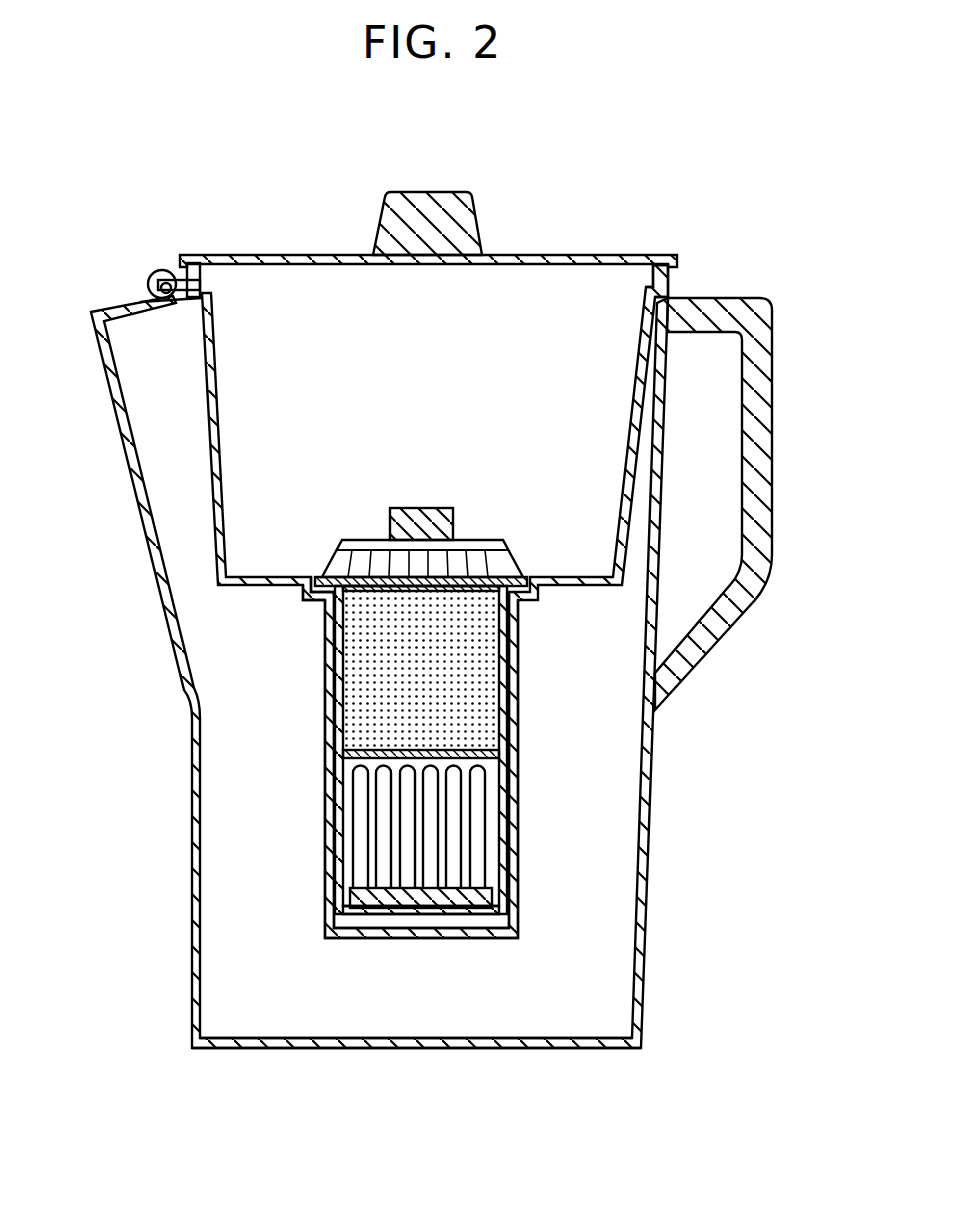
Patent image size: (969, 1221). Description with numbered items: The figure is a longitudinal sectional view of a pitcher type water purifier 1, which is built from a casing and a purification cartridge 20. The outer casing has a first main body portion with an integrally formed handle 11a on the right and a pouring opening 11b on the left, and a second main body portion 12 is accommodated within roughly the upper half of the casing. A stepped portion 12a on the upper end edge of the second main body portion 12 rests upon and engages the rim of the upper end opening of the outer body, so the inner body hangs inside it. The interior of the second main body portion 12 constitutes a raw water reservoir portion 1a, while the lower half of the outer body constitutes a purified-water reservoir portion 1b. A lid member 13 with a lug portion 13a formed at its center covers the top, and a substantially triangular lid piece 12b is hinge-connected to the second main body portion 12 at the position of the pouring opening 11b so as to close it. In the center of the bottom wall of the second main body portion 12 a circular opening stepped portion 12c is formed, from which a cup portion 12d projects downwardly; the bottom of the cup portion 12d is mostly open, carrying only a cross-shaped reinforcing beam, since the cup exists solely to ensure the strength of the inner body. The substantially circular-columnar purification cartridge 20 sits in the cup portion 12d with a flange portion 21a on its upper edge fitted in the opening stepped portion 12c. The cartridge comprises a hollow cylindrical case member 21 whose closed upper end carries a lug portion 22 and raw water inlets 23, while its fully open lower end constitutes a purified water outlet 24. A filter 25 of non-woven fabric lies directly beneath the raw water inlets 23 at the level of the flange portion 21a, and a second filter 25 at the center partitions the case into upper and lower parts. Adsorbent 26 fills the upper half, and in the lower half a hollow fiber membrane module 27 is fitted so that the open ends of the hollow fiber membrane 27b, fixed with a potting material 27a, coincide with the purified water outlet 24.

The pitcher type water purifier 1 is at (700, 171).
The raw water reservoir portion 1a is at (300, 293).
The purified-water reservoir portion 1b is at (603, 978).
The handle 11a is at (770, 549).
The pouring opening 11b is at (112, 392).
The second main body portion 12 is at (215, 535).
The stepped portion 12a is at (672, 272).
The lid piece 12b is at (133, 292).
The opening stepped portion 12c is at (308, 606).
The cup portion 12d is at (327, 762).
The lid member 13 is at (602, 254).
The lug portion 13a is at (440, 193).
The purification cartridge 20 is at (342, 900).
The case member 21 is at (503, 682).
The flange portion 21a is at (520, 580).
The lug portion 22 is at (432, 508).
The raw water inlets 23 is at (366, 548).
The purified water outlet 24 is at (347, 912).
The filter 25 is at (413, 588).
The adsorbent 26 is at (482, 640).
The hollow fiber membrane module 27 is at (594, 786).
The potting material 27a is at (470, 888).
The hollow fiber membrane 27b is at (483, 800).